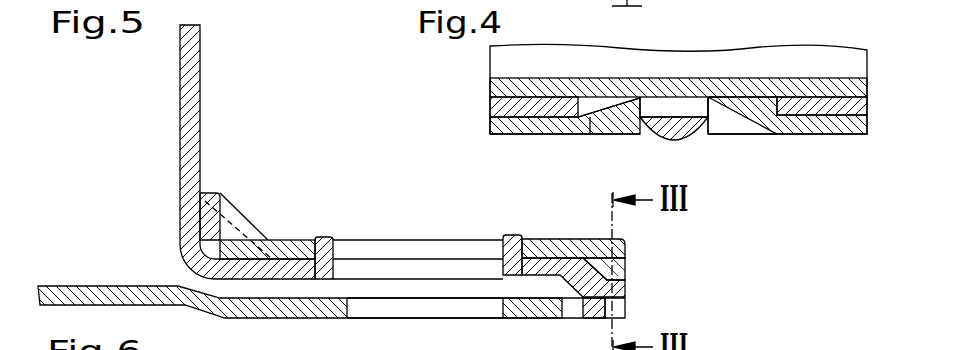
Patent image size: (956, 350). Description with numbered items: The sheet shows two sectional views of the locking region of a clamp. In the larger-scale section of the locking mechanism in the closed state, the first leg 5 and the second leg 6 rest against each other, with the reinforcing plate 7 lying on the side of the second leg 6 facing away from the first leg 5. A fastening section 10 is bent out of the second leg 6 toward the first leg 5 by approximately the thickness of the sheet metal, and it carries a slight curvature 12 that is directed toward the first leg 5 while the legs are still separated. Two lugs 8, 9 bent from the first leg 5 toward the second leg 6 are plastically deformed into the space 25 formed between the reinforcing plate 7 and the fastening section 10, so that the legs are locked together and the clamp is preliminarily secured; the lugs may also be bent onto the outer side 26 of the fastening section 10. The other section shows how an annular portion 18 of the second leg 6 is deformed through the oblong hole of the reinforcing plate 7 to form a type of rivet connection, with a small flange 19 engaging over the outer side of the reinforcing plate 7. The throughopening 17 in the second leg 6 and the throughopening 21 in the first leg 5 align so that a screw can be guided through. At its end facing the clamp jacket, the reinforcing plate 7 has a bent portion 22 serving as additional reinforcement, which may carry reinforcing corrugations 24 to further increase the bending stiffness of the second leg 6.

In FIG. 4, the first leg 5 is at (491, 126).
In FIG. 5, the first leg 5 is at (317, 312).
In FIG. 4, the second leg 6 is at (858, 115).
In FIG. 5, the second leg 6 is at (285, 270).
In FIG. 4, the reinforcing plate 7 is at (858, 84).
In FIG. 5, the reinforcing plate 7 is at (540, 244).
In FIG. 4, the lug 8 is at (607, 124).
In FIG. 4, the lug 9 is at (767, 127).
In FIG. 5, the lug 9 is at (617, 263).
In FIG. 4, the fastening section 10 is at (710, 128).
In FIG. 5, the fastening section 10 is at (622, 283).
In FIG. 4, the curvature 12 is at (690, 132).
In FIG. 5, the throughopening 17 is at (368, 262).
In FIG. 5, the annular portion 18 is at (510, 250).
In FIG. 5, the flange 19 is at (321, 236).
In FIG. 5, the throughopening 21 is at (405, 308).
In FIG. 5, the bent portion 22 is at (197, 212).
In FIG. 5, the reinforcing corrugations 24 is at (243, 222).
In FIG. 4, the space 25 is at (677, 107).
In FIG. 4, the outer side 26 is at (708, 97).